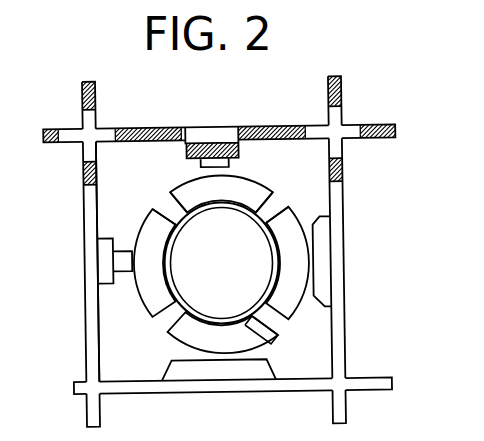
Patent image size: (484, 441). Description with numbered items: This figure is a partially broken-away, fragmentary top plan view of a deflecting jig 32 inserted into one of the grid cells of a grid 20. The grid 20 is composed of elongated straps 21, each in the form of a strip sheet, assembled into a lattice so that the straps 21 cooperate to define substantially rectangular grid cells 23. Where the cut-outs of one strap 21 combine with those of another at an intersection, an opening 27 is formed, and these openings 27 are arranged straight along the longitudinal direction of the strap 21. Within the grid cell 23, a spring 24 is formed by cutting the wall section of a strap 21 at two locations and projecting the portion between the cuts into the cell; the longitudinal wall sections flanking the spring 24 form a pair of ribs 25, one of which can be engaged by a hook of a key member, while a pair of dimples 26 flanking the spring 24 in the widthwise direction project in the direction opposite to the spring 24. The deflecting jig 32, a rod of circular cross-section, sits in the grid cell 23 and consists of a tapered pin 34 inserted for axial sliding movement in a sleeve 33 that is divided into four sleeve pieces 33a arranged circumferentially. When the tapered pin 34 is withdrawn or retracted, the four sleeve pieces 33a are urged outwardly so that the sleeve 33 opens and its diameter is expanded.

The grid 20 is at (343, 99).
The elongated strap 21 is at (178, 392).
The grid cell 23 is at (107, 317).
The spring 24 is at (100, 258).
The rib 25 is at (276, 127).
The dimple 26 is at (228, 380).
The opening 27 is at (352, 125).
The deflecting jig 32 is at (301, 317).
The sleeve 33 is at (147, 308).
The sleeve piece 33a is at (262, 340).
The tapered pin 34 is at (243, 310).